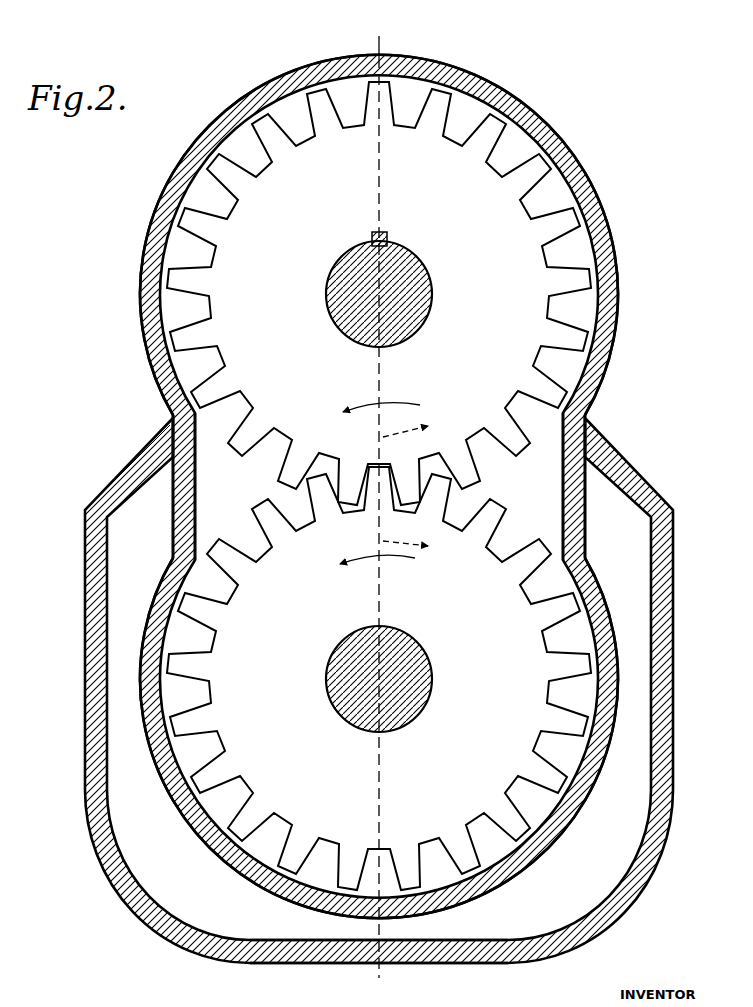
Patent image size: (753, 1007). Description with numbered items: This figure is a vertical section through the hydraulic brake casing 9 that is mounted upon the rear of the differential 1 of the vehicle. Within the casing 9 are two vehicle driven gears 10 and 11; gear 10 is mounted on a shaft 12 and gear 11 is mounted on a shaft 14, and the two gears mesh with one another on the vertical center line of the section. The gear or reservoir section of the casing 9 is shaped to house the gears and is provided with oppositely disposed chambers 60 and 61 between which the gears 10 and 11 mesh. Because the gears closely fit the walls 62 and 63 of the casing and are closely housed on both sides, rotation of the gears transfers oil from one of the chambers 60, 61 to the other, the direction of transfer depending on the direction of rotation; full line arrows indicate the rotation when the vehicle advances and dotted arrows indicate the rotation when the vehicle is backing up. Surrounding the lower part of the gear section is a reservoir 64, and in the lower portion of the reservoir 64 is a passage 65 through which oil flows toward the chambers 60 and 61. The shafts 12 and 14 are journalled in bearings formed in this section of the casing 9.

The differential 1 is at (393, 981).
The hydraulic brake casing 9 is at (149, 327).
The vehicle driven gear 10 is at (506, 229).
The vehicle driven gear 11 is at (530, 598).
The shaft 12 is at (397, 317).
The shaft 14 is at (405, 690).
The chamber 60 is at (200, 469).
The chamber 61 is at (530, 468).
The wall 62 is at (152, 241).
The wall 63 is at (192, 806).
The reservoir 64 is at (145, 781).
The passage 65 is at (352, 927).